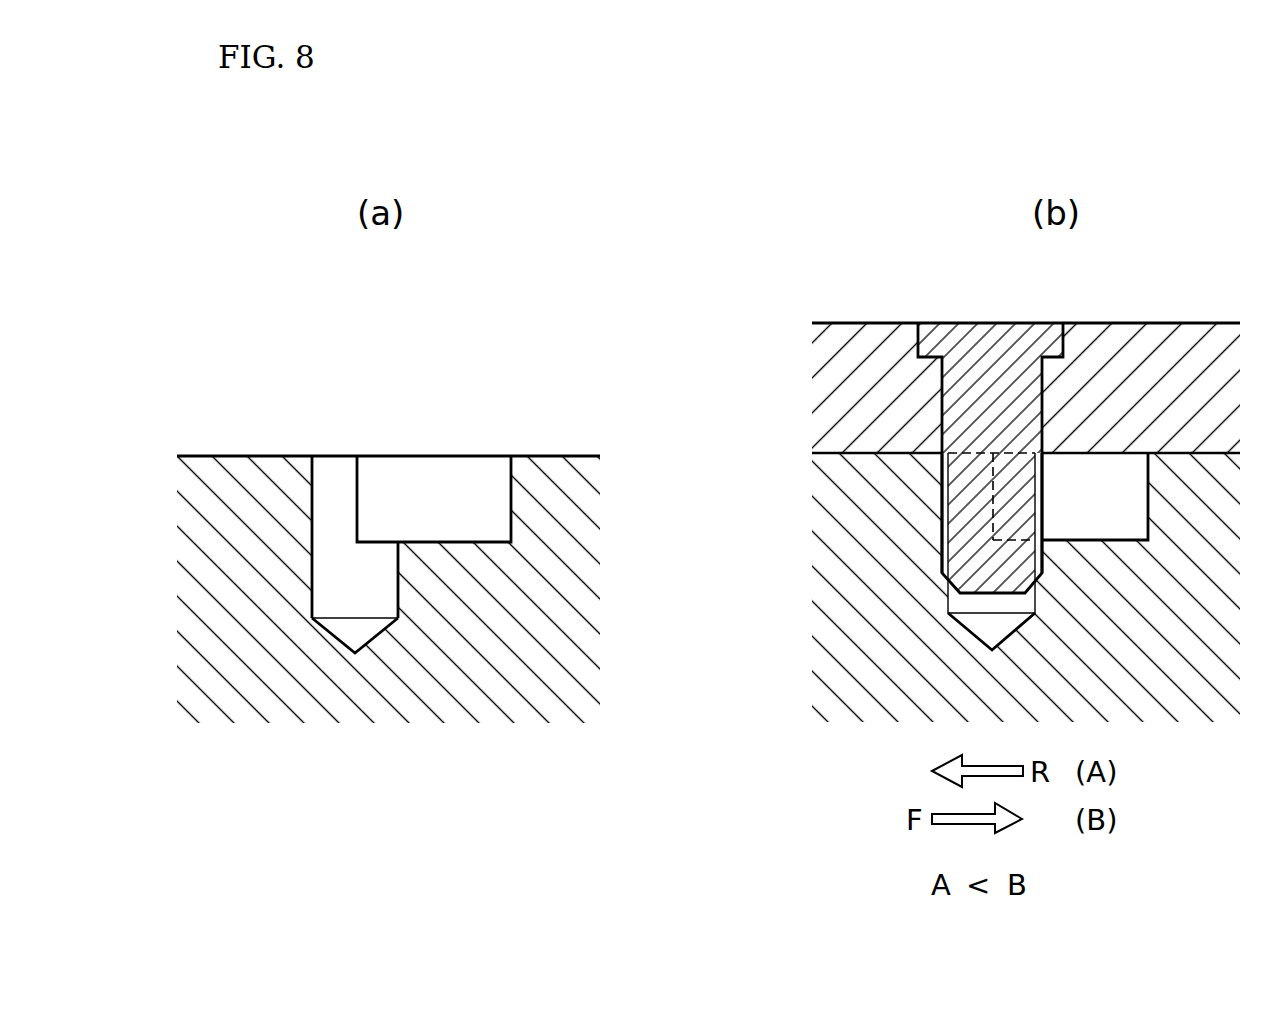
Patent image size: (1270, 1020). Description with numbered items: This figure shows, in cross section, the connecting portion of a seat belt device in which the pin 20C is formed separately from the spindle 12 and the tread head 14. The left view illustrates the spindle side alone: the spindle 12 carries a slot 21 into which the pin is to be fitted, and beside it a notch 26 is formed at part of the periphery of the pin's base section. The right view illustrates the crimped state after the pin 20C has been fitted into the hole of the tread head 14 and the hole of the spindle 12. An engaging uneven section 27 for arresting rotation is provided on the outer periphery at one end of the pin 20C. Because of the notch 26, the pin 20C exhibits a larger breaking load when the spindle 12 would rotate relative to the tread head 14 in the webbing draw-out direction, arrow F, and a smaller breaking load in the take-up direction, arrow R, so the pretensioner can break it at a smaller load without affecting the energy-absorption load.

The spindle 12 is at (233, 672).
The tread head 14 is at (855, 355).
The pin 20C is at (1012, 358).
The slot 21 is at (380, 573).
The notch 26 is at (390, 495).
The engaging uneven section 27 is at (944, 545).